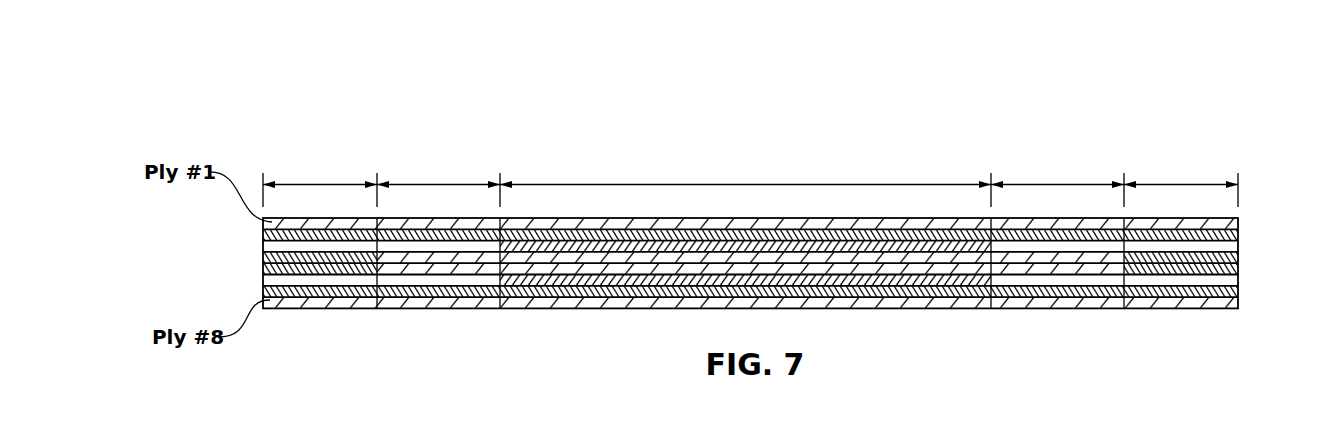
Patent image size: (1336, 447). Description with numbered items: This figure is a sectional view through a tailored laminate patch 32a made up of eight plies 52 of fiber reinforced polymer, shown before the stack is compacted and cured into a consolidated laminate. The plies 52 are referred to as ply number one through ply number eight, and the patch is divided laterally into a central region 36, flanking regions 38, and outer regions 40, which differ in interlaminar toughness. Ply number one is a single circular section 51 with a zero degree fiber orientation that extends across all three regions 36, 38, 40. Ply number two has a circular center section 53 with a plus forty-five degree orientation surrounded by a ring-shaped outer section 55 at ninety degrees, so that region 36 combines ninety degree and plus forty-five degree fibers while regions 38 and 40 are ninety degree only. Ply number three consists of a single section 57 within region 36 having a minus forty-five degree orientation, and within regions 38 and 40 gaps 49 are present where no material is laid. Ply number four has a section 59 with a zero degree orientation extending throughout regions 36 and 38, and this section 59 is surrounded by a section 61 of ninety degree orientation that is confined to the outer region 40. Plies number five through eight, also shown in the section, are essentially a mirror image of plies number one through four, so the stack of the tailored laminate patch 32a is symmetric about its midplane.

The tailored laminate patch 32a is at (232, 107).
The region 36 is at (700, 184).
The region 38 is at (437, 180).
The region 40 is at (317, 180).
The gaps 49 is at (350, 245).
The section 51 is at (758, 228).
The plies 52 is at (275, 292).
The center section 53 is at (840, 237).
The ply 55 is at (547, 240).
The section 57 is at (882, 248).
The section 59 is at (575, 247).
The section 61 is at (1232, 255).